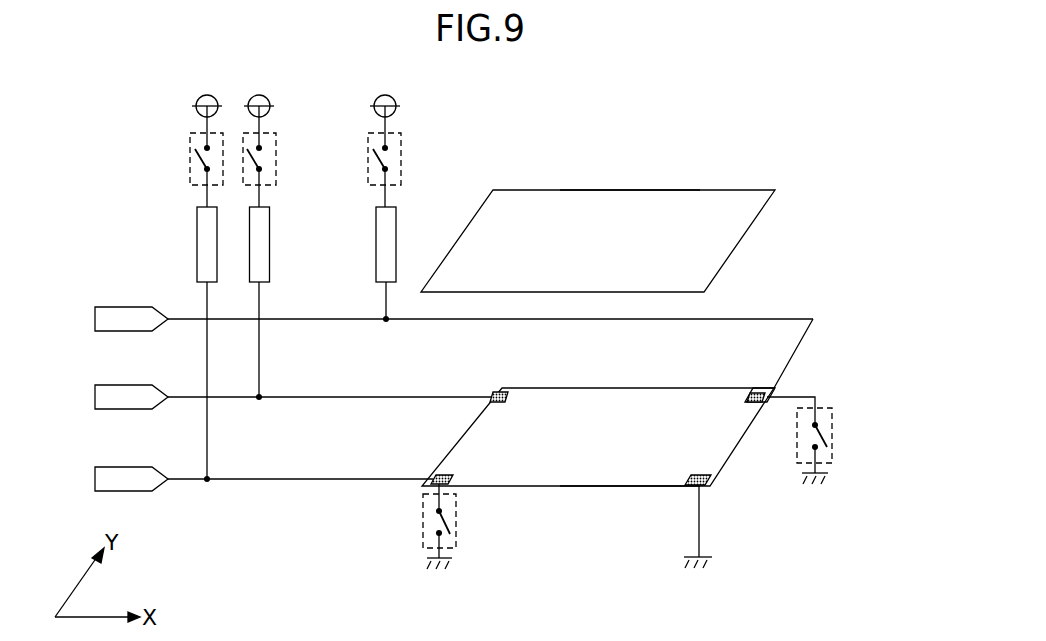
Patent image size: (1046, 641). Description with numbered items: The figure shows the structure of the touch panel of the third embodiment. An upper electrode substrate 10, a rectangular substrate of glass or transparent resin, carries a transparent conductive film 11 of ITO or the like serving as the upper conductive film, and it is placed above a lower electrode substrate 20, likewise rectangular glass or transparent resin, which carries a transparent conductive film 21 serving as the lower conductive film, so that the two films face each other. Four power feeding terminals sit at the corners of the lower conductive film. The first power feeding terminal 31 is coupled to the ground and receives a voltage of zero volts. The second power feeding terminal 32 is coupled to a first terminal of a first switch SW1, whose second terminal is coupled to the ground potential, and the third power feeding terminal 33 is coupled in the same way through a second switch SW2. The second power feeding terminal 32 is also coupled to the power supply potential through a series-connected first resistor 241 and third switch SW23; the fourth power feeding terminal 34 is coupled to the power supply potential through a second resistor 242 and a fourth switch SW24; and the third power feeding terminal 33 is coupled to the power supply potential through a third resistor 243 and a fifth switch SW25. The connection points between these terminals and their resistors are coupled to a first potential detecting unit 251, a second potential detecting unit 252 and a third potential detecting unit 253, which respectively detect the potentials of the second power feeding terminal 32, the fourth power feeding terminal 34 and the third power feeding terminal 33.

The upper electrode substrate 10 is at (633, 190).
The transparent conductive film 11 is at (686, 207).
The lower electrode substrate 20 is at (553, 488).
The transparent conductive film 21 is at (610, 465).
The first power feeding terminal 31 is at (712, 486).
The second power feeding terminal 32 is at (752, 389).
The third power feeding terminal 33 is at (437, 476).
The fourth power feeding terminal 34 is at (493, 393).
The first resistor 241 is at (397, 213).
The second resistor 242 is at (270, 245).
The third resistor 243 is at (197, 245).
The first potential detecting unit 251 is at (117, 306).
The second potential detecting unit 252 is at (117, 384).
The third potential detecting unit 253 is at (117, 466).
The first switch SW1 is at (833, 434).
The second switch SW2 is at (423, 524).
The third switch SW23 is at (403, 160).
The fourth switch SW24 is at (278, 160).
The fifth switch SW25 is at (189, 158).